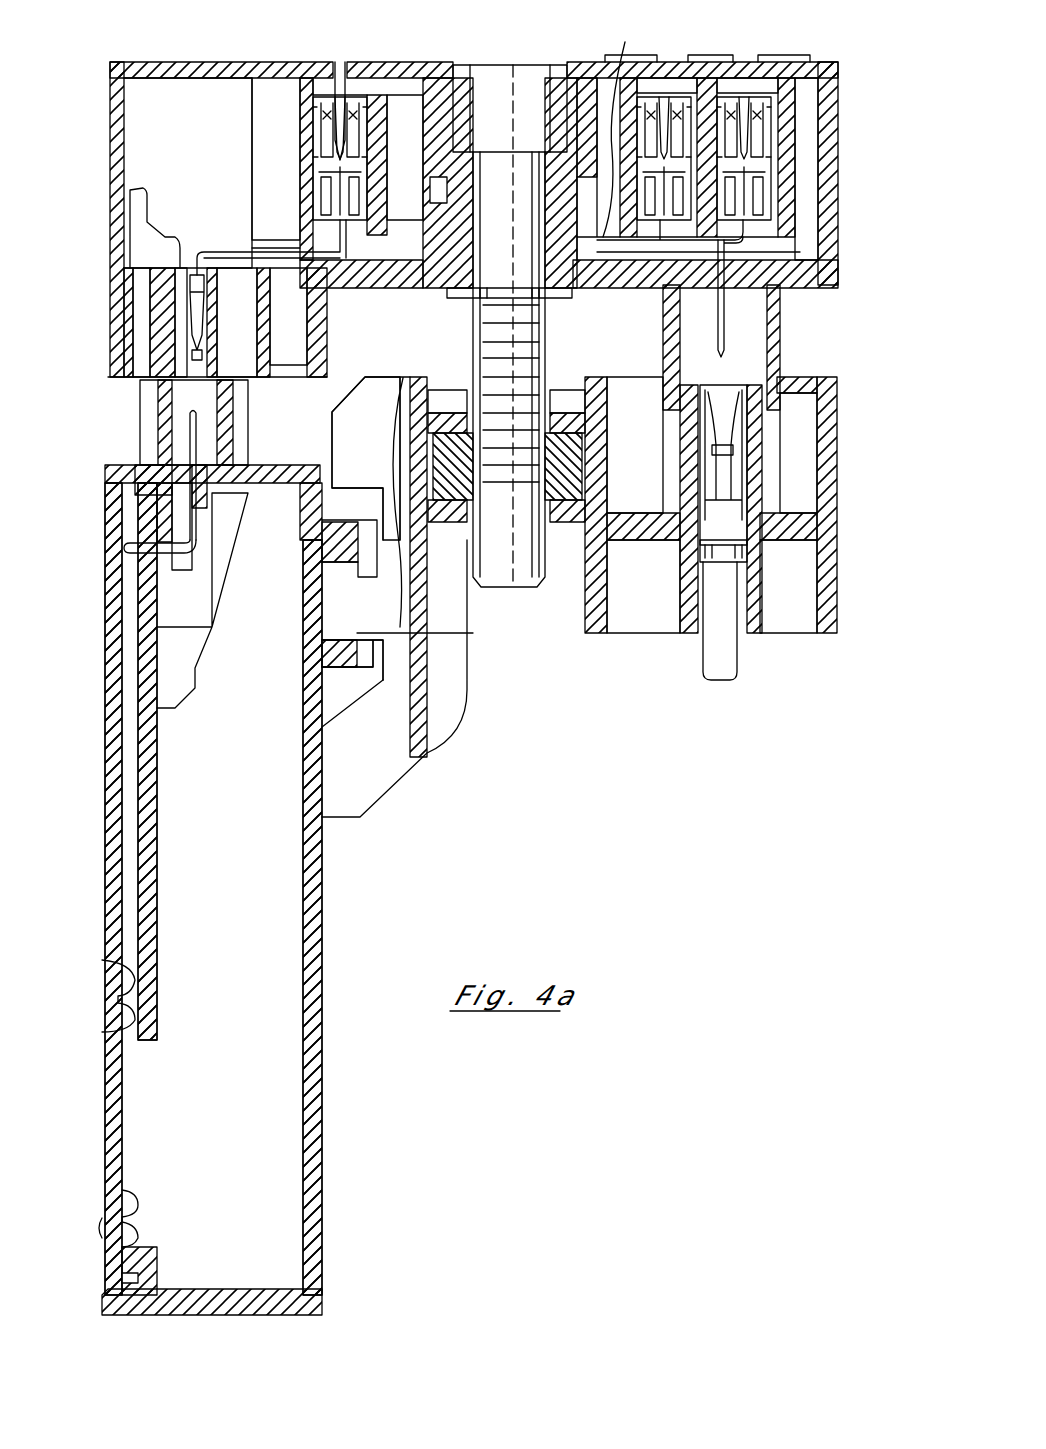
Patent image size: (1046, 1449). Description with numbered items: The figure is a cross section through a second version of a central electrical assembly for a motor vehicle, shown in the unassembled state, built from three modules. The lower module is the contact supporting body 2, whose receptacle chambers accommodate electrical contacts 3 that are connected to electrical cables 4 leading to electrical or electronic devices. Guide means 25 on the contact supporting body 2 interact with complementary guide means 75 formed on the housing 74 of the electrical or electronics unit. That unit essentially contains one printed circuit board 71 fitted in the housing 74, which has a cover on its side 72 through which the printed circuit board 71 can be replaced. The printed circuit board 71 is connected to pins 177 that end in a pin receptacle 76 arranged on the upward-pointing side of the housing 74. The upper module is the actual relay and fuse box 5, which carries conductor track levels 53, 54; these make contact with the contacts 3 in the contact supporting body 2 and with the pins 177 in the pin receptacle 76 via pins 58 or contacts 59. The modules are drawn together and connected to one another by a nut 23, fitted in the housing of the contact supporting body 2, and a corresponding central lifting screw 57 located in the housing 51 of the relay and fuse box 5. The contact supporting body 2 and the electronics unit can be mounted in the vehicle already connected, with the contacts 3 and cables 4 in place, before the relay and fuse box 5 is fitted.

The contact supporting body 2 is at (822, 523).
The electrical contact 3 is at (730, 450).
The electrical cable 4 is at (727, 650).
The relay and fuse box 5 is at (693, 190).
The nut 23 is at (572, 520).
The guide means 25 is at (345, 607).
The housing 51 is at (830, 188).
The conductor track level 53 is at (710, 248).
The conductor track level 54 is at (622, 121).
The central lifting screw 57 is at (503, 82).
The pin 58 is at (725, 327).
The contact 59 is at (190, 312).
The printed circuit board 71 is at (140, 903).
The side 72 is at (108, 1085).
The housing 74 is at (313, 1007).
The complementary guide means 75 is at (322, 660).
The pin receptacle 76 is at (190, 428).
The pin 177 is at (128, 547).